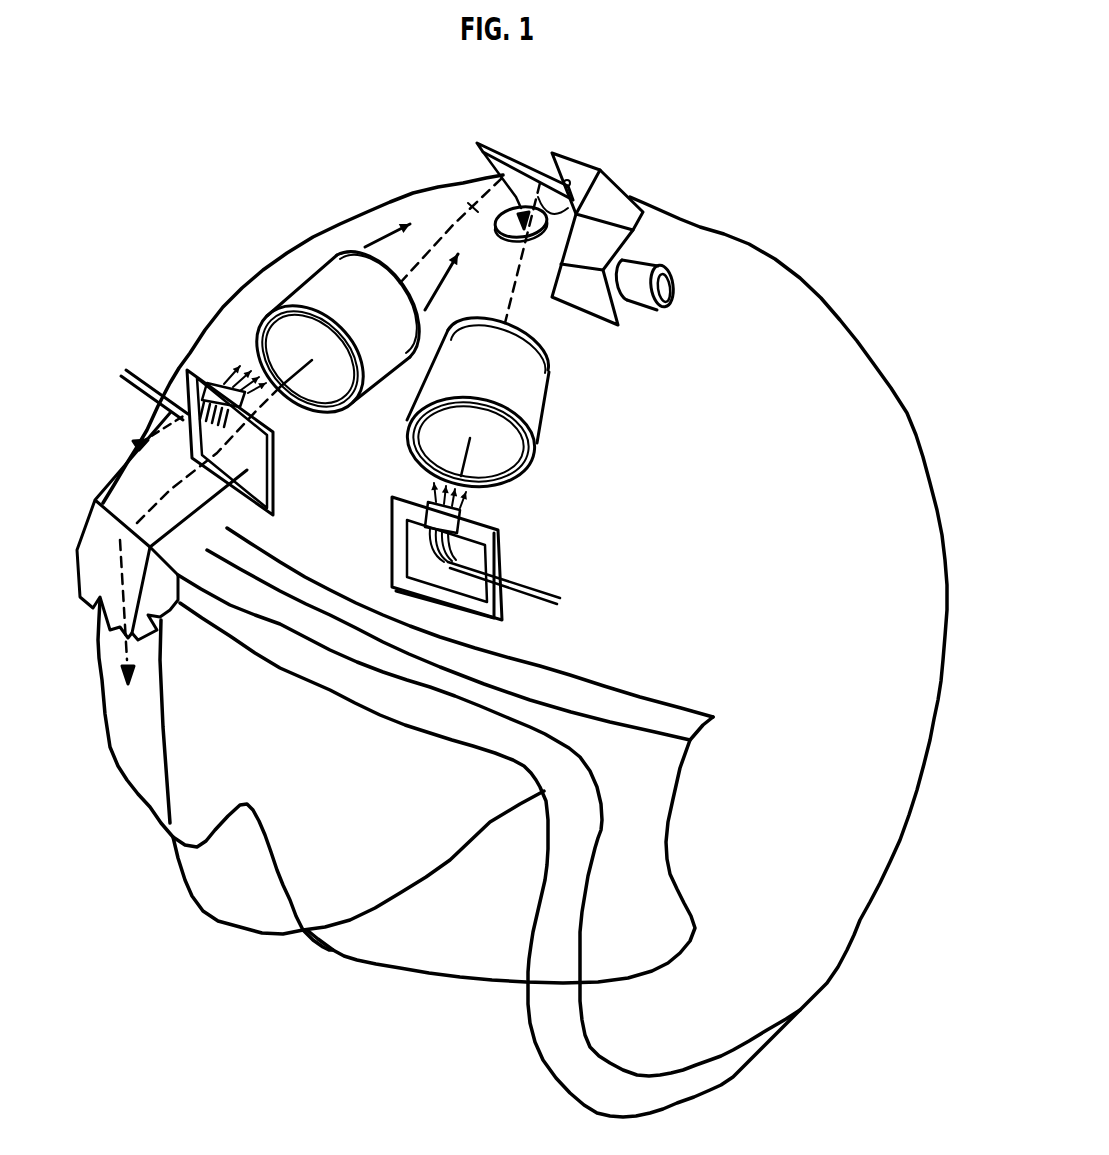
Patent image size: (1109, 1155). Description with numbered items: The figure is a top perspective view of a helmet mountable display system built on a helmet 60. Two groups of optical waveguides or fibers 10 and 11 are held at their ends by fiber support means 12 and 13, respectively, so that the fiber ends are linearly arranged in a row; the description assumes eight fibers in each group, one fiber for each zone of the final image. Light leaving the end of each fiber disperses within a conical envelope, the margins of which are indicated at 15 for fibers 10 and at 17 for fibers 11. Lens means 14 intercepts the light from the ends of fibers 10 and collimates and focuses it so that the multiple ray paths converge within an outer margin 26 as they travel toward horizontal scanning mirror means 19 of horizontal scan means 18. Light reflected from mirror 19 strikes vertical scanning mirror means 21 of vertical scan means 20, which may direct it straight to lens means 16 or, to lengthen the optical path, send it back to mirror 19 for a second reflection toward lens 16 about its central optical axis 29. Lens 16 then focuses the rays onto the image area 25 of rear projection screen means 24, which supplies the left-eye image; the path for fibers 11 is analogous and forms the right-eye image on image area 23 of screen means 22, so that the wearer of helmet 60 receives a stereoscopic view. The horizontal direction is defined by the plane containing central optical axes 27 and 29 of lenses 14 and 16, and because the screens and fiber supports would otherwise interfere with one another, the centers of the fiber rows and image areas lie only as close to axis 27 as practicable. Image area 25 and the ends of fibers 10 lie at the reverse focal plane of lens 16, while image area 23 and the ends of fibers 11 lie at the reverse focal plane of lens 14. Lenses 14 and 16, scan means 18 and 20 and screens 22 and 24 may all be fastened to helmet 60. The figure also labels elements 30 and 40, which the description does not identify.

The optical fibers 10 is at (138, 400).
The optical fibers 11 is at (548, 607).
The fiber support means 12 is at (205, 385).
The fiber support means 13 is at (429, 500).
The lens means 14 is at (280, 294).
The conical envelope margins 15 is at (233, 358).
The lens means 16 is at (548, 415).
The conical envelope margins 17 is at (474, 497).
The horizontal scan means 18 is at (587, 157).
The horizontal scanning mirror means 19 is at (511, 142).
The vertical scan means 20 is at (630, 317).
The vertical scanning mirror means 21 is at (493, 243).
The rear projection screen means 22 is at (278, 485).
The image area 23 is at (255, 458).
The rear projection screen means 24 is at (444, 558).
The image area 25 is at (478, 557).
The outer margin 26 is at (380, 240).
The central optical axis 27 is at (468, 203).
The central optical axis 29 is at (513, 305).
The transmission strap 30 is at (110, 482).
The chin strap 40 is at (136, 803).
The helmet 60 is at (755, 246).